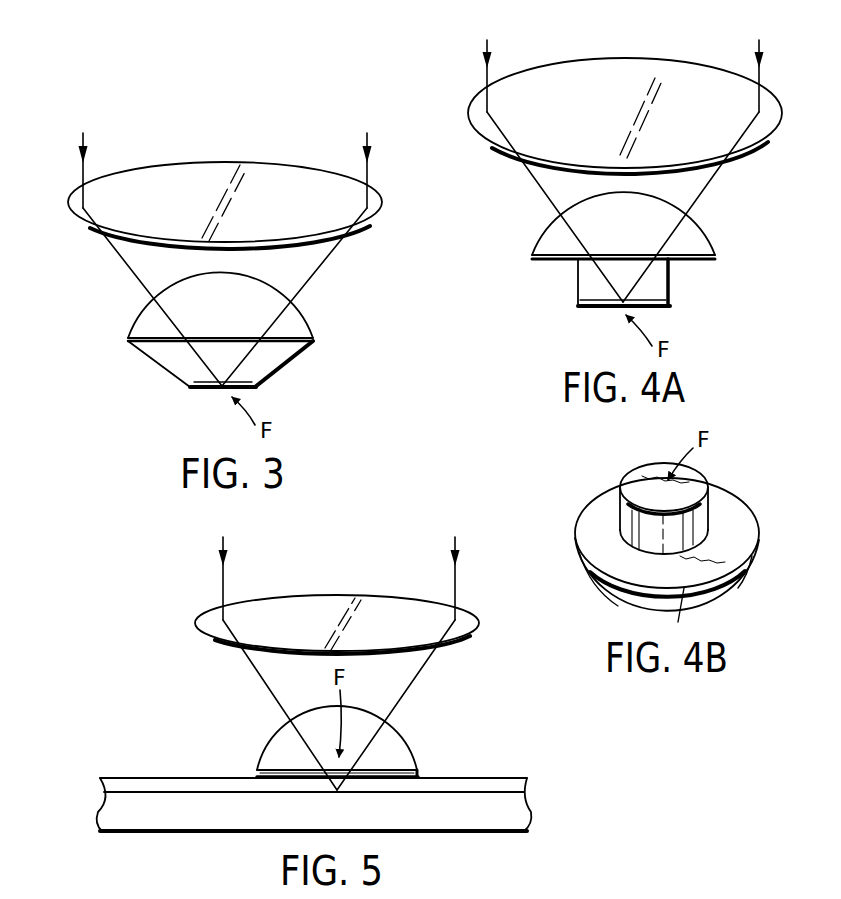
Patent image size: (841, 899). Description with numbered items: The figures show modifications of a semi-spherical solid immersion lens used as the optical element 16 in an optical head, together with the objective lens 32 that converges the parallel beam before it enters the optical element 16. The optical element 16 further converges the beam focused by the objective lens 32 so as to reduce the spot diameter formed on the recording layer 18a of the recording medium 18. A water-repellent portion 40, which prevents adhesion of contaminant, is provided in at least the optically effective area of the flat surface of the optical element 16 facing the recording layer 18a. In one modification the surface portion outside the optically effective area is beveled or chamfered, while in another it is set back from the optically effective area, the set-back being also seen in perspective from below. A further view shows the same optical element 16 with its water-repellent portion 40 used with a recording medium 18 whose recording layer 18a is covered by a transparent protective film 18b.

In FIG. 3, the optical element 16 is at (150, 318).
In FIG. 4A, the optical element 16 is at (548, 233).
In FIG. 4B, the optical element 16 is at (597, 522).
In FIG. 5, the optical element 16 is at (270, 735).
In FIG. 4A, the recording medium 18 is at (472, 103).
In FIG. 5, the recording medium 18 is at (269, 777).
In FIG. 5, the recording layer 18a is at (120, 787).
In FIG. 5, the transparent protective film 18b is at (178, 778).
In FIG. 3, the objective lens 32 is at (71, 198).
In FIG. 5, the objective lens 32 is at (202, 618).
In FIG. 3, the water-repellent portion 40 is at (260, 378).
In FIG. 4A, the water-repellent portion 40 is at (658, 297).
In FIG. 4B, the water-repellent portion 40 is at (708, 471).
In FIG. 5, the water-repellent portion 40 is at (395, 767).